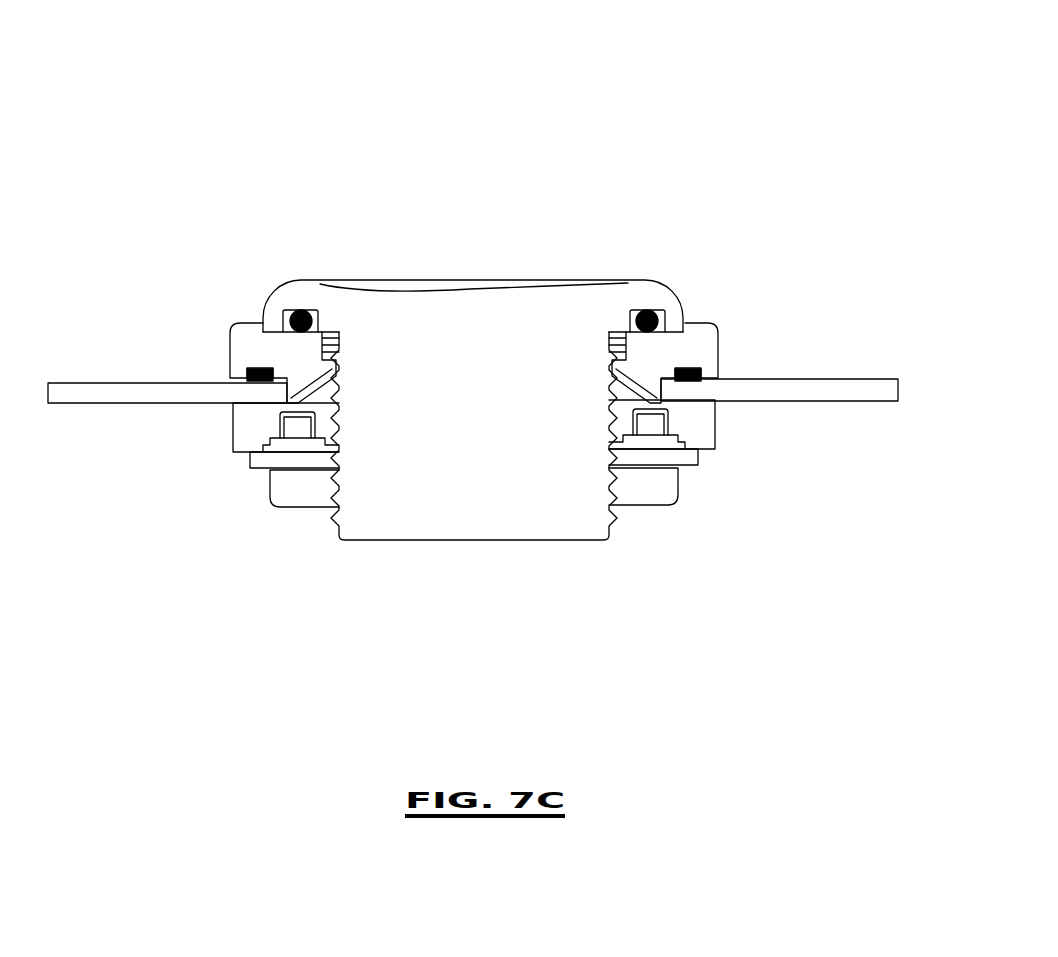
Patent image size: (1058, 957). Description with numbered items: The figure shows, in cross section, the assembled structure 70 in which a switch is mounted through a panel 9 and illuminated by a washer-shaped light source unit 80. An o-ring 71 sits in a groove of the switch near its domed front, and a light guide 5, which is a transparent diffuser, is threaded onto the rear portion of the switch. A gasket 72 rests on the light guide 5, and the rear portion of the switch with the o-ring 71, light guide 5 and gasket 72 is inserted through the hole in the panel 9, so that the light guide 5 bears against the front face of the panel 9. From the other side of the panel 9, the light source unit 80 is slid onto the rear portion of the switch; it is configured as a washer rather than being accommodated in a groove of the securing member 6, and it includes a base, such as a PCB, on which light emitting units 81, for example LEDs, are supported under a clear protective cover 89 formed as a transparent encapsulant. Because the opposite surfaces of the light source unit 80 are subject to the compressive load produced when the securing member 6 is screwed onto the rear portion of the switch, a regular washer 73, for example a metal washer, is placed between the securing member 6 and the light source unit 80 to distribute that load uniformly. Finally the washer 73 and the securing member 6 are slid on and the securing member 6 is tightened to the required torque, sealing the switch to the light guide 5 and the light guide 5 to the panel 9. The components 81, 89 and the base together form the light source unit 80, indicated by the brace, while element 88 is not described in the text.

The structure 70 is at (325, 135).
The o-ring 71 is at (651, 314).
The light guide 5 is at (703, 340).
The panel 9 is at (745, 390).
The gasket 72 is at (265, 382).
The washer 73 is at (275, 457).
The securing member 6 is at (322, 493).
The light source unit 80 is at (768, 526).
The protective cover 89 is at (703, 423).
The light emitting unit 81 is at (658, 425).
The washer 88 is at (643, 445).